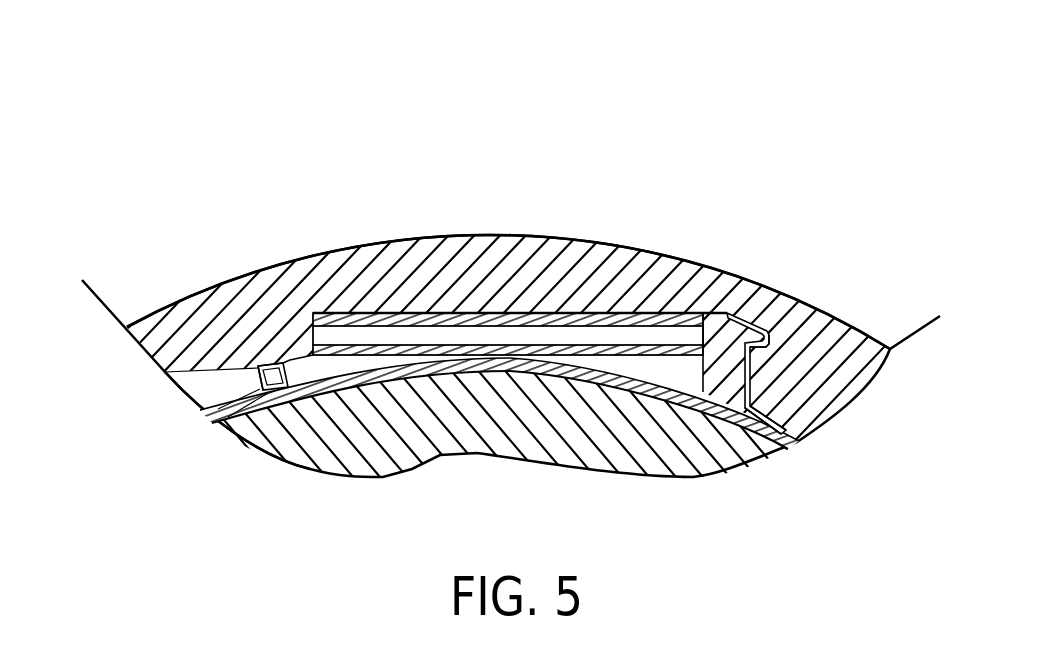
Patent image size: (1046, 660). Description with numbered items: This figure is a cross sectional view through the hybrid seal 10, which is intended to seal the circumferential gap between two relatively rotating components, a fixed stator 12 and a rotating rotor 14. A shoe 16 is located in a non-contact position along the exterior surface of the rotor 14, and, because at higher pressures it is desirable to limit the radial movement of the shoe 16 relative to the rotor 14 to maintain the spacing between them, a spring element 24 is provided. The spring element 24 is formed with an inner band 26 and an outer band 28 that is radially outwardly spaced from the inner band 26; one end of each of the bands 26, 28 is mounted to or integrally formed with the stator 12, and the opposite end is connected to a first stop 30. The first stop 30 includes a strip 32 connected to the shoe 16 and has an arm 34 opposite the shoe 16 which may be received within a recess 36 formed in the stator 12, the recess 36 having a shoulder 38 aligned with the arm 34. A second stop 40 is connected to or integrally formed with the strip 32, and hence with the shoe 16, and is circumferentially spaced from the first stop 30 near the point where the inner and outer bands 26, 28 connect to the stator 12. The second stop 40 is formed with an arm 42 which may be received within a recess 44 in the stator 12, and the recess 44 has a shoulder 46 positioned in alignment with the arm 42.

The hybrid seal 10 is at (266, 143).
The stator 12 is at (187, 320).
The rotor 14 is at (655, 458).
The shoe 16 is at (233, 433).
The spring element 24 is at (554, 361).
The inner band 26 is at (375, 350).
The outer band 28 is at (520, 313).
The first stop 30 is at (723, 328).
The strip 32 is at (717, 380).
The arm 34 is at (813, 330).
The recess 36 is at (777, 337).
The shoulder 38 is at (812, 410).
The second stop 40 is at (206, 388).
The arm 42 is at (272, 373).
The recess 44 is at (258, 368).
The shoulder 46 is at (238, 392).